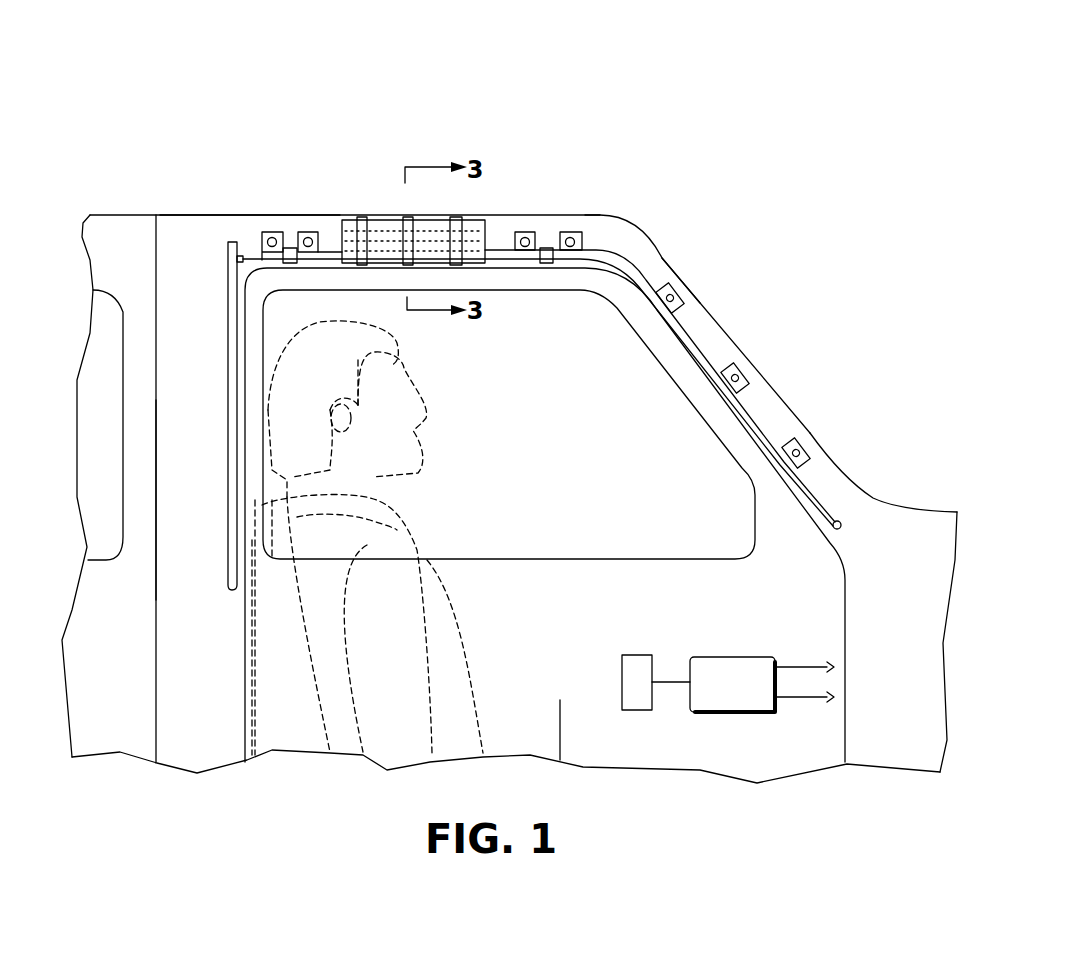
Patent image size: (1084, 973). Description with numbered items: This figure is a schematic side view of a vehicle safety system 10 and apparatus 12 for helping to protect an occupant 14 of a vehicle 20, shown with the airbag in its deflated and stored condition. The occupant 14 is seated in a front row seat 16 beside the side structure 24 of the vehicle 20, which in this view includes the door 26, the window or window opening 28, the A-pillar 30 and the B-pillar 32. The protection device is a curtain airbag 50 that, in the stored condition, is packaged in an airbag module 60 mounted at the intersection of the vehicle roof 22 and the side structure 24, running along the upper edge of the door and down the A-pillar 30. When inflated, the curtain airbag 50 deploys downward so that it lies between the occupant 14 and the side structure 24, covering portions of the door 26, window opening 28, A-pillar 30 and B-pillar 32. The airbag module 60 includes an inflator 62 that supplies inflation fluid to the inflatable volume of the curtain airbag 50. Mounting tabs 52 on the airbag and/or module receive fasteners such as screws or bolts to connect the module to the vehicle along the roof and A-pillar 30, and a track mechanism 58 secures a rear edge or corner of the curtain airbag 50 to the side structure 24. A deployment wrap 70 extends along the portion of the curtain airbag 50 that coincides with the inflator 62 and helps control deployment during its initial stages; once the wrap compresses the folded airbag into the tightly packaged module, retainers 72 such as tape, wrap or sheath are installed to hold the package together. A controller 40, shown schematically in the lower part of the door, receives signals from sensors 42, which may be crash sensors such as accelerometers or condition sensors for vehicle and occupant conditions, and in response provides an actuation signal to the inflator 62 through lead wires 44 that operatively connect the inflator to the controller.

The vehicle safety system 10 is at (662, 132).
The apparatus 12 is at (598, 145).
The occupant 14 is at (375, 420).
The front row seat 16 is at (285, 683).
The vehicle 20 is at (465, 174).
The vehicle roof 22 is at (250, 227).
The side structure 24 is at (172, 491).
The door 26 is at (598, 697).
The window/window opening 28 is at (543, 528).
The A-pillar 30 is at (773, 403).
The B-pillar 32 is at (197, 313).
The controller 40 is at (725, 682).
The sensors 42 is at (633, 692).
The lead wires 44 is at (323, 238).
The curtain airbag 50 is at (615, 265).
The mounting tabs 52 is at (273, 235).
The track mechanism 58 is at (228, 410).
The airbag module 60 is at (690, 267).
The inflator 62 is at (332, 237).
The deployment wrap 70 is at (390, 235).
The retainers 72 is at (407, 265).